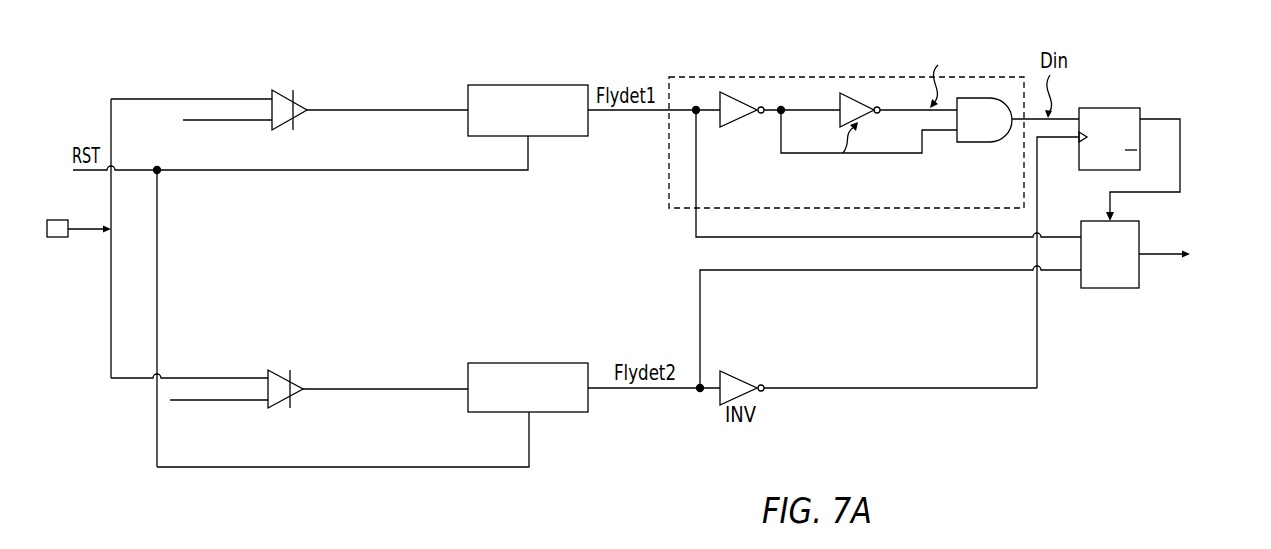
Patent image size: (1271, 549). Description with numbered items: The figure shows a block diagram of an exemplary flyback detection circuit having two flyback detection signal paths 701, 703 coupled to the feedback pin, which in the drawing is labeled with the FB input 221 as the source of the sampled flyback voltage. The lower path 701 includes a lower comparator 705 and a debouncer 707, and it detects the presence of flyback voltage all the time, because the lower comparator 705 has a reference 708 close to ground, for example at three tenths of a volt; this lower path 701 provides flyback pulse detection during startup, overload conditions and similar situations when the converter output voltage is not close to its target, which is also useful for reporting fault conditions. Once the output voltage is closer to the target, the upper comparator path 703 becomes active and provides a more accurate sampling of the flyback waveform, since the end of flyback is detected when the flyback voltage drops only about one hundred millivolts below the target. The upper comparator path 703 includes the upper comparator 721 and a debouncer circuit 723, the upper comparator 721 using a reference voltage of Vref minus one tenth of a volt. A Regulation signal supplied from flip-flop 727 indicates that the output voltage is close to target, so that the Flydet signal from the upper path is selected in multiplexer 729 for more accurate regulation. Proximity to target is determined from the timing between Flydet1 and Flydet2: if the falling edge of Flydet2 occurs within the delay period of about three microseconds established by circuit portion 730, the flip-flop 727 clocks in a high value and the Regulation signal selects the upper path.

The feedback signal source 221 is at (70, 238).
The lower flyback detection signal path 701 is at (343, 432).
The upper comparator path 703 is at (289, 96).
The lower comparator 705 is at (272, 370).
The debouncer 707 is at (570, 413).
The reference 708 is at (258, 402).
The upper comparator 721 is at (284, 89).
The debouncer circuit 723 is at (565, 137).
The flip-flop 727 is at (1078, 155).
The multiplexer 729 is at (1108, 289).
The circuit portion 730 is at (808, 77).